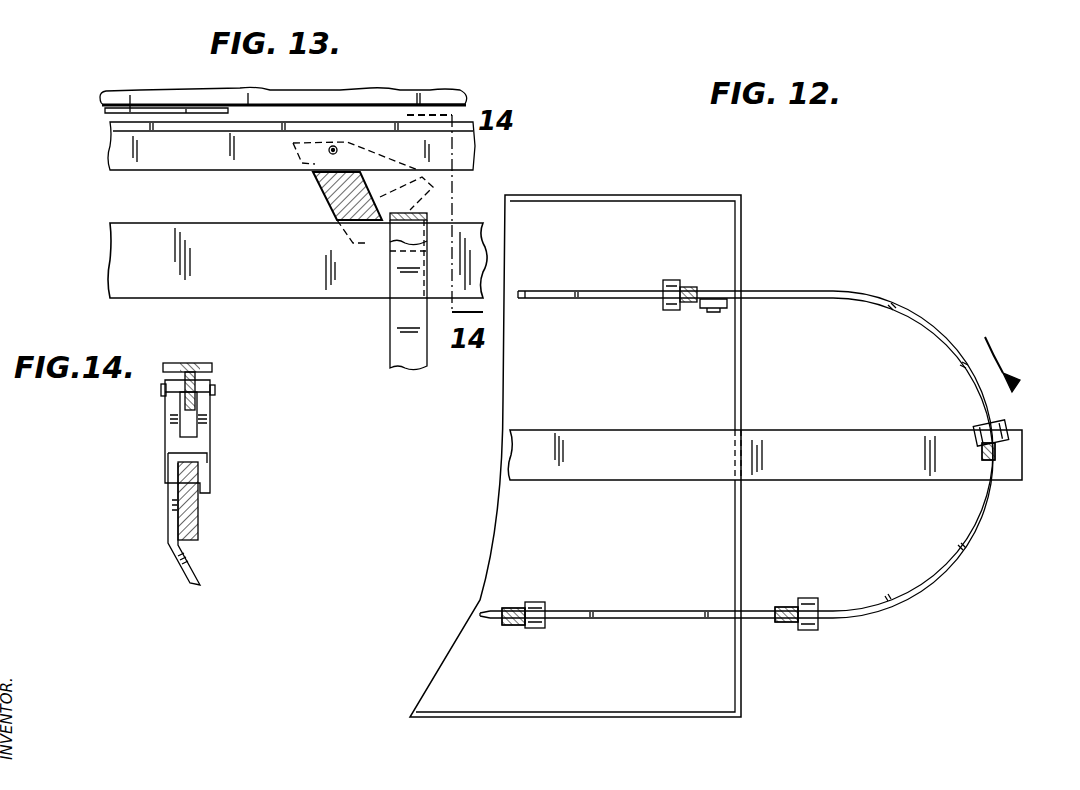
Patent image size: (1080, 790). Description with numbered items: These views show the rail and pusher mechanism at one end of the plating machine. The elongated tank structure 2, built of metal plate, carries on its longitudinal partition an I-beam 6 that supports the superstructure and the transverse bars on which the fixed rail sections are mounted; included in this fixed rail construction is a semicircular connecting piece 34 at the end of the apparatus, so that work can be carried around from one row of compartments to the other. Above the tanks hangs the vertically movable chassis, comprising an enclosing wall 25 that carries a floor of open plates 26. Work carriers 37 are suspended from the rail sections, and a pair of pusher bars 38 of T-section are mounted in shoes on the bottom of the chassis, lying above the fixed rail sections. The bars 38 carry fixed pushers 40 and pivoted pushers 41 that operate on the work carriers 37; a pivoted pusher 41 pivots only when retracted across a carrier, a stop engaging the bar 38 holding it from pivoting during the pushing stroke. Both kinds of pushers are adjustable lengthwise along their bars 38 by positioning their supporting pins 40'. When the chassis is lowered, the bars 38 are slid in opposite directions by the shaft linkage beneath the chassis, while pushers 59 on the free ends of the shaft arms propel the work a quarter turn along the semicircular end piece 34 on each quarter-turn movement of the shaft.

In FIG. 12, the tank structure 2 is at (613, 697).
In FIG. 12, the longitudinal I-beam 6 is at (627, 438).
In FIG. 13, the enclosing wall 25 is at (403, 92).
In FIG. 13, the open plates 26 is at (128, 110).
In FIG. 13, the semicircular connecting piece 34 is at (143, 268).
In FIG. 14, the semicircular connecting piece 34 is at (200, 505).
In FIG. 12, the semicircular connecting piece 34 is at (902, 308).
In FIG. 13, the work carrier 37 is at (405, 345).
In FIG. 14, the work carrier 37 is at (192, 562).
In FIG. 12, the work carrier 37 is at (677, 280).
In FIG. 13, the pusher bar 38 is at (460, 153).
In FIG. 14, the pusher bar 38 is at (197, 363).
In FIG. 12, the fixed pusher 40 is at (521, 646).
In FIG. 14, the supporting pin 40' is at (213, 392).
In FIG. 13, the pivoted pusher 41 is at (332, 195).
In FIG. 14, the pivoted pusher 41 is at (200, 442).
In FIG. 12, the pivoted pusher 41 is at (788, 623).
In FIG. 12, the pusher 59 is at (997, 458).